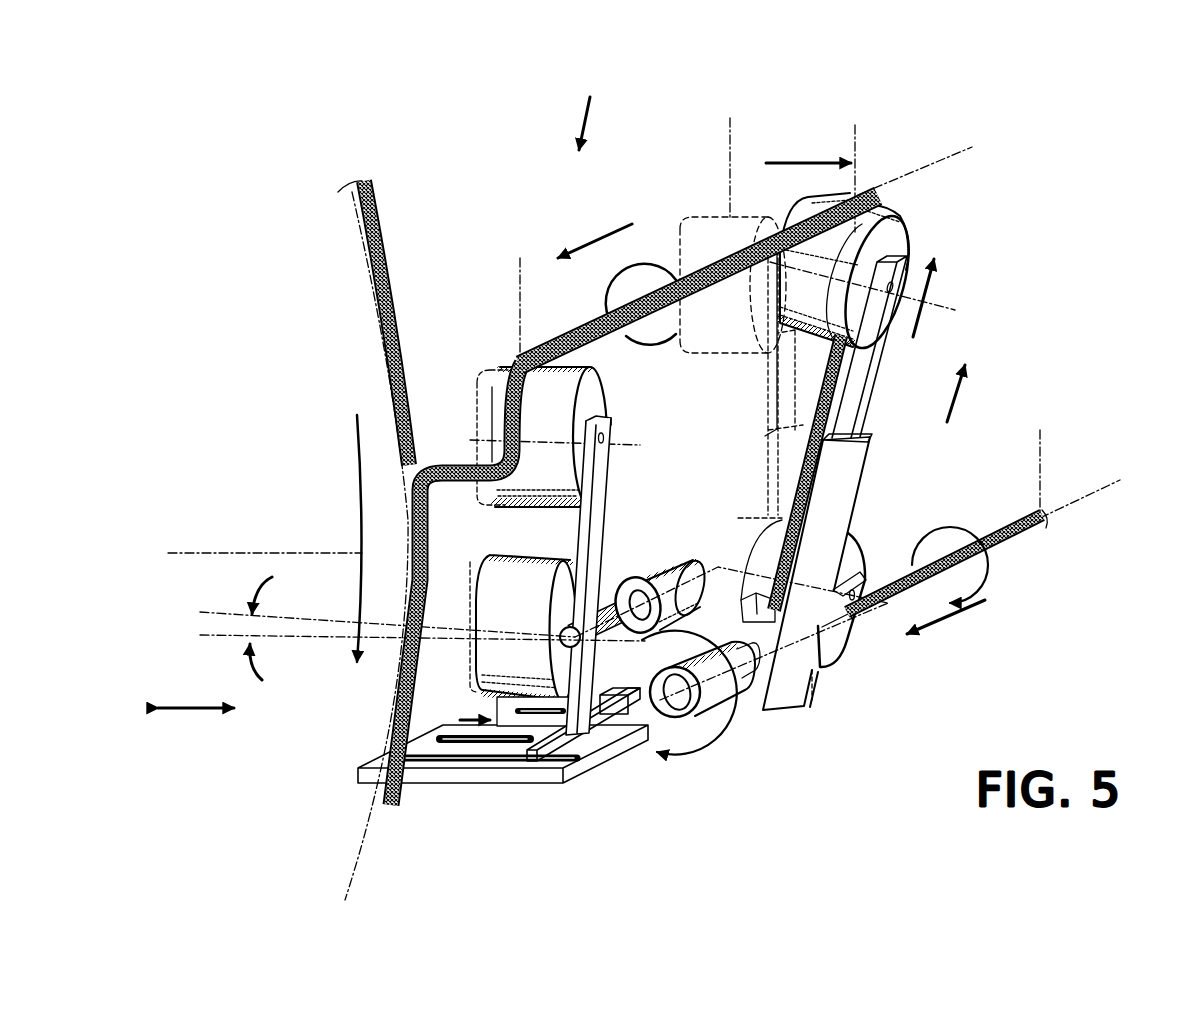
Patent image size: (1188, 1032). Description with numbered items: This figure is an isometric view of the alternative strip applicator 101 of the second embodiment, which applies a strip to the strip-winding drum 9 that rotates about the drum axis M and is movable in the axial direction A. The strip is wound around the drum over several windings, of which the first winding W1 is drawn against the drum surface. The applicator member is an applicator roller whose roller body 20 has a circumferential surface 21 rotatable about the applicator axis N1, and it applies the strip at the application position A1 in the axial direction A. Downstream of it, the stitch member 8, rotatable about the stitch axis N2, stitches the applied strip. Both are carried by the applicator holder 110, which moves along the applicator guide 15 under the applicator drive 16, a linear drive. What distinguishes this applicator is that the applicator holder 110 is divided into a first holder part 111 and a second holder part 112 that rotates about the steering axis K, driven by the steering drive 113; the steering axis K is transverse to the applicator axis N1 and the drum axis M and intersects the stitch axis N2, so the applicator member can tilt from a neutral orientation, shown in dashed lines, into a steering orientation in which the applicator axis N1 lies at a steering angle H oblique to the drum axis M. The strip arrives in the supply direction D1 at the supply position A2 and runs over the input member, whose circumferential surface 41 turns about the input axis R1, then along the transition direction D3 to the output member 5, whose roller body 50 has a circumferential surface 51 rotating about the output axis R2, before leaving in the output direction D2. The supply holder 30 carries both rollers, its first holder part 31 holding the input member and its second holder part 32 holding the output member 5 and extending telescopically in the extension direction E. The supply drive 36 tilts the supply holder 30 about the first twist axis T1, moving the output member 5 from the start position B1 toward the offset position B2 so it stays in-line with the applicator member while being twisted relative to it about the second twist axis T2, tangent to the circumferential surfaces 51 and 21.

The alternative strip applicator 101 is at (594, 96).
The strip-winding drum 9 is at (233, 498).
The stitch member 8 is at (482, 650).
The roller body 20 is at (492, 497).
The circumferential surface 21 is at (526, 363).
The output member 5 is at (780, 290).
The roller body 50 is at (805, 338).
The circumferential surface 51 is at (900, 232).
The supply holder 30 is at (850, 473).
The first holder part 31 is at (848, 505).
The second holder part 32 is at (878, 358).
The circumferential surface 41 is at (858, 555).
The supply drive 36 is at (688, 730).
The applicator holder 110 is at (600, 522).
The first holder part 111 is at (588, 668).
The second holder part 112 is at (606, 475).
The steering drive 113 is at (682, 565).
The applicator guide 15 is at (575, 760).
The applicator drive 16 is at (618, 730).
The first winding W1 is at (372, 262).
The steering axis K is at (573, 640).
The drum axis M is at (249, 552).
The applicator axis N1 is at (568, 426).
The stitch axis N2 is at (398, 615).
The steering angle H is at (249, 637).
The axial direction A is at (196, 731).
The application position A1 is at (524, 297).
The supply position A2 is at (1046, 457).
The start position B1 is at (784, 151).
The offset position B2 is at (862, 162).
The first twist axis T1 is at (1103, 481).
The second twist axis T2 is at (936, 155).
The input axis R1 is at (738, 633).
The output axis R2 is at (882, 294).
The extension direction E is at (935, 292).
The supply direction D1 is at (946, 629).
The output direction D2 is at (595, 230).
The transition direction D3 is at (978, 395).